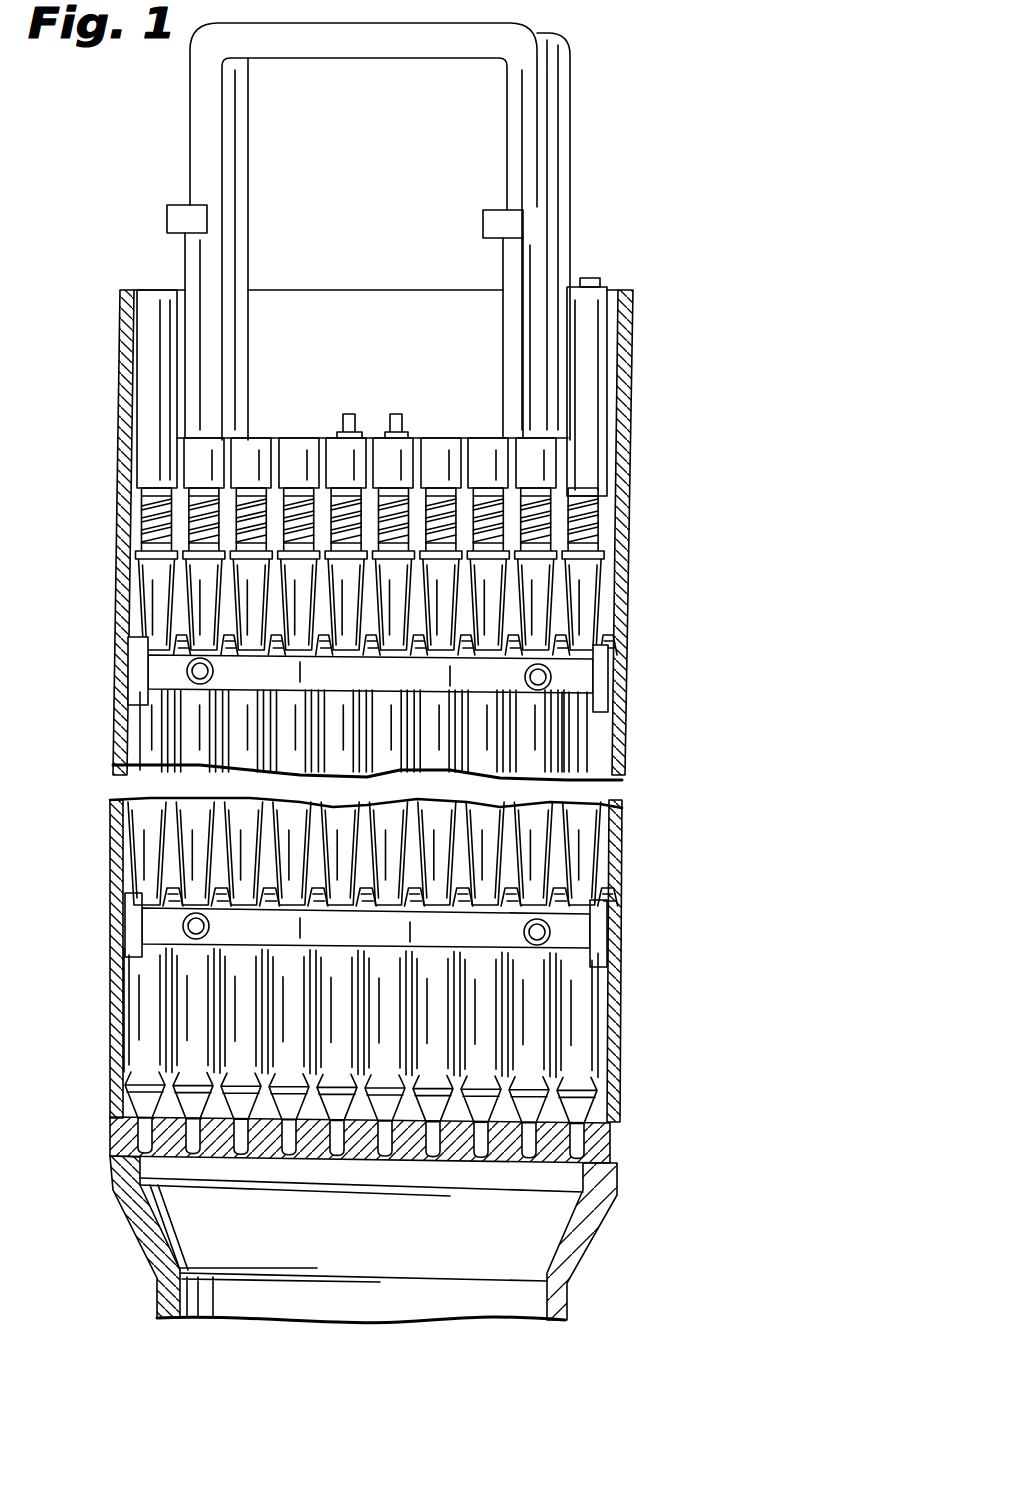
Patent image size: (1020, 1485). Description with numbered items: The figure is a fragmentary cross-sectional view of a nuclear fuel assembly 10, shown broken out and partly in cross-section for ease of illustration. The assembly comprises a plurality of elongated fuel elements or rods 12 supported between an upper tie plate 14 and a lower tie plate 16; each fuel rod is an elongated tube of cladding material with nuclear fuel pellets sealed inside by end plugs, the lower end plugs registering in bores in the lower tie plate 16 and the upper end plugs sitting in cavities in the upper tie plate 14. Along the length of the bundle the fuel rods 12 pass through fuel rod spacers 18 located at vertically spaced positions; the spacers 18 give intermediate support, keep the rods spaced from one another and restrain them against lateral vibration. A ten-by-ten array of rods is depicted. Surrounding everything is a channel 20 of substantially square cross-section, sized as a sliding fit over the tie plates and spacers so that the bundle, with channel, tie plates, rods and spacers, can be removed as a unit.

The nuclear fuel assembly 10 is at (660, 683).
The fuel rods 12 is at (580, 745).
The upper tie plate 14 is at (533, 467).
The lower tie plate 16 is at (575, 1128).
The fuel rod spacers 18 is at (148, 660).
The channel 20 is at (622, 873).